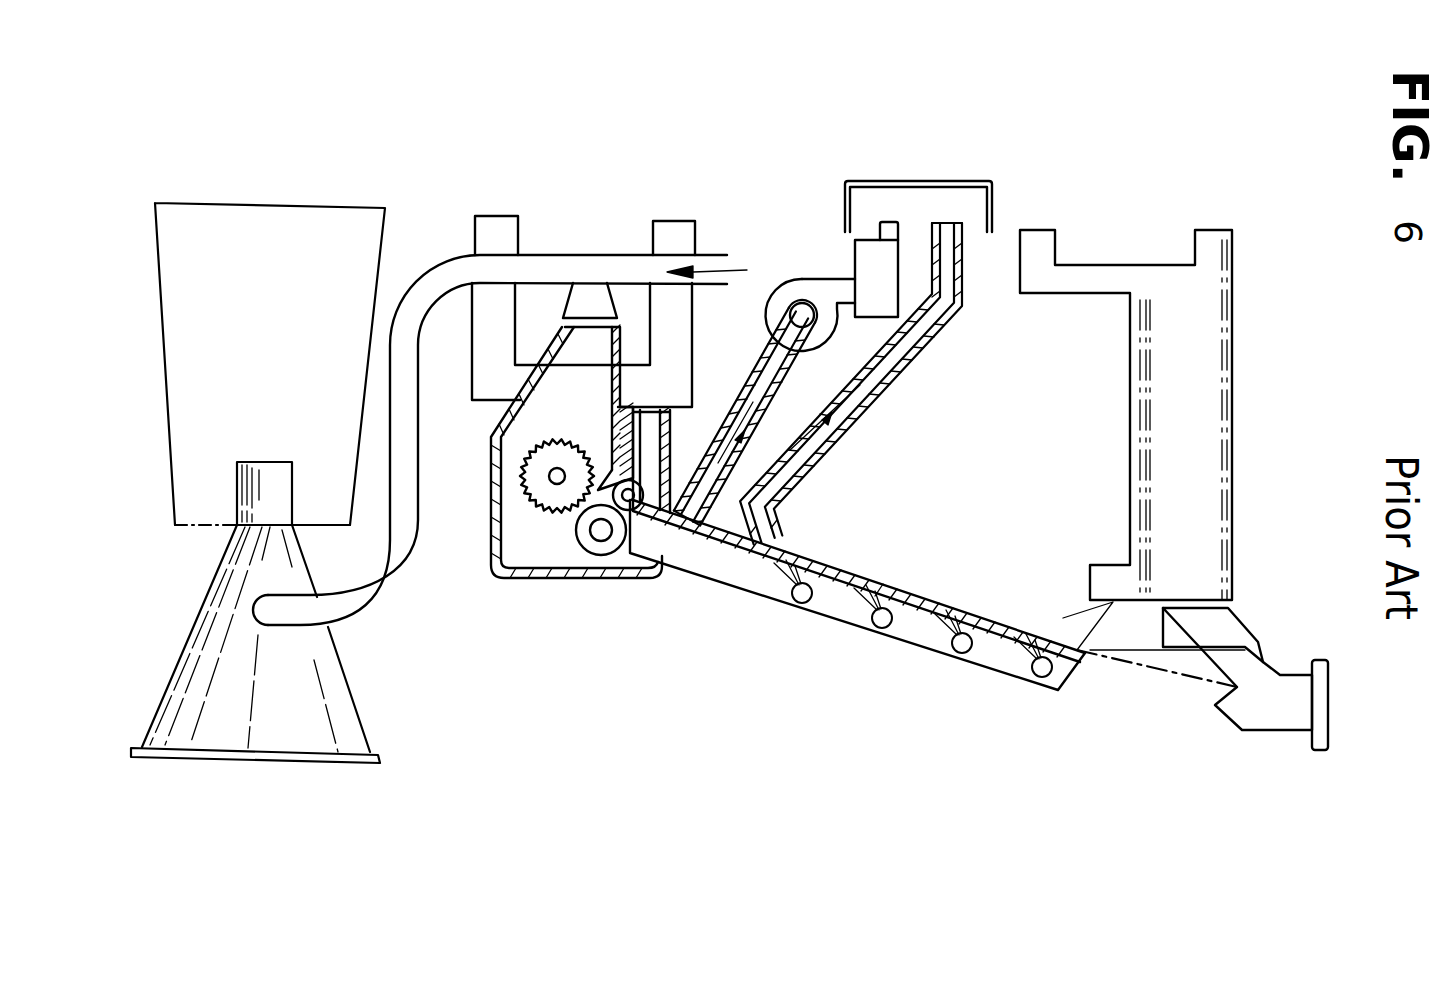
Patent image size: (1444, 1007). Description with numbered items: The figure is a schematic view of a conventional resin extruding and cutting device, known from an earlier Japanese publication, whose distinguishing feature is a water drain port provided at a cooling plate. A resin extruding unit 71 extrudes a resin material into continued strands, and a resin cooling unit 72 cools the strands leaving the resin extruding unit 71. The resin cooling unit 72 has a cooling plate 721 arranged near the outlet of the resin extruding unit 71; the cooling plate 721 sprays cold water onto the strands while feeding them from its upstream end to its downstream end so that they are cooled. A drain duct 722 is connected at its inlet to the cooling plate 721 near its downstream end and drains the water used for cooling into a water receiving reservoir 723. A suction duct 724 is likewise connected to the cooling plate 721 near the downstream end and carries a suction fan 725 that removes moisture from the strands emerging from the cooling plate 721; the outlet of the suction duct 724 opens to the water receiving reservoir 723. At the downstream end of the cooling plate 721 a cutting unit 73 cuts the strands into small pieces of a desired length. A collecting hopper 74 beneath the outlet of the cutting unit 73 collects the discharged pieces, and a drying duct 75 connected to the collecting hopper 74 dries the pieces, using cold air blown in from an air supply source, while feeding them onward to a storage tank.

The resin extruding unit 71 is at (1262, 740).
The resin cooling unit 72 is at (975, 675).
The cooling plate 721 is at (905, 588).
The drain duct 722 is at (783, 455).
The water receiving reservoir 723 is at (921, 205).
The suction duct 724 is at (693, 512).
The suction fan 725 is at (802, 292).
The cutting unit 73 is at (567, 592).
The collecting hopper 74 is at (592, 295).
The drying duct 75 is at (717, 263).